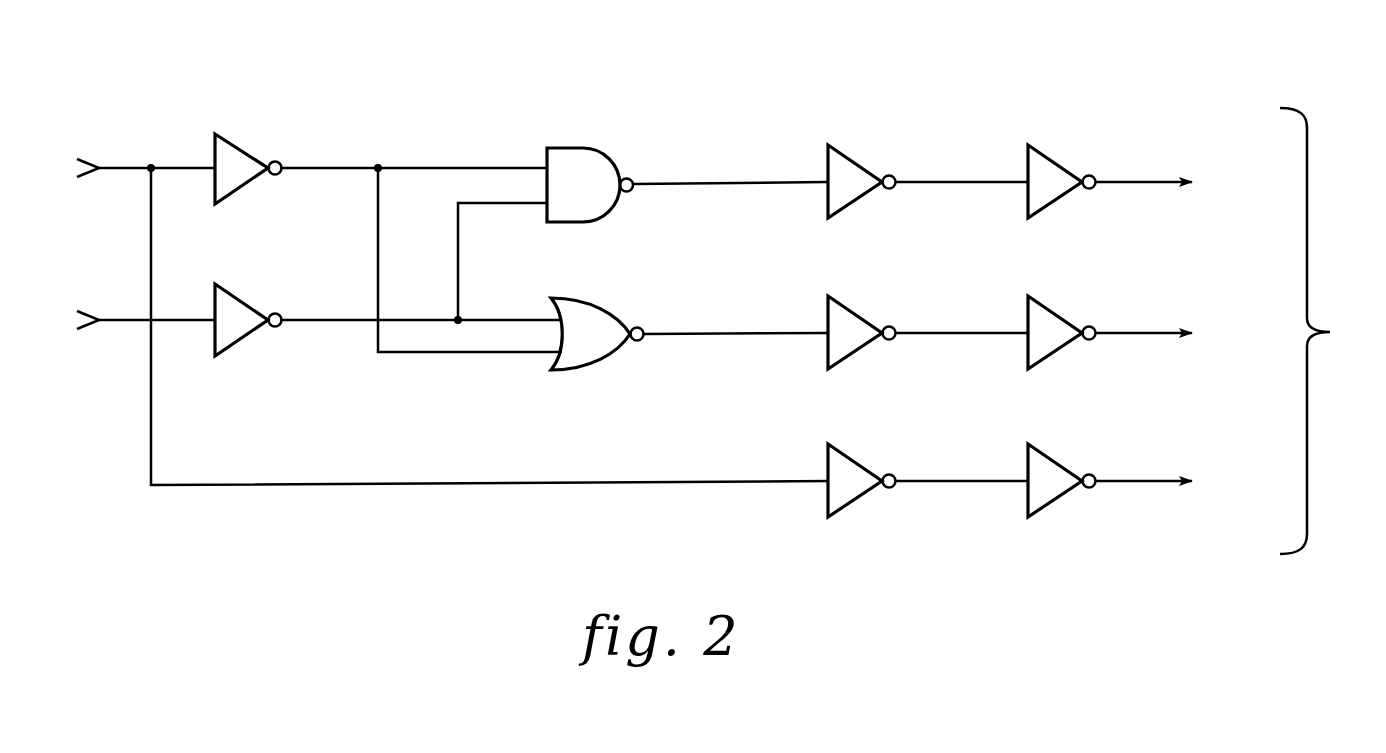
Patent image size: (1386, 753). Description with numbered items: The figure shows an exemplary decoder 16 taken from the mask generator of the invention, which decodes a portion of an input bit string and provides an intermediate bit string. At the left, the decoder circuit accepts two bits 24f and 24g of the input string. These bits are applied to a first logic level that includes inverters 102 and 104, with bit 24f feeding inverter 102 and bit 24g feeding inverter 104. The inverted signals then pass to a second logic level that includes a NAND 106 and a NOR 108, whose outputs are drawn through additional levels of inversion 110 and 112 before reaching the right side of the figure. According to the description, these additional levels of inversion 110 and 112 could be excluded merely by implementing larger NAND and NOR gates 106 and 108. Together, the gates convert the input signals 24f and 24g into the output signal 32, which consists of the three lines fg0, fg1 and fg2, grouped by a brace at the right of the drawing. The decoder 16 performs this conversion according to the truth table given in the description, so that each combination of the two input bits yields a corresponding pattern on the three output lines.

The bit 24f is at (123, 168).
The bit 24g is at (123, 322).
The inverter 102 is at (236, 148).
The inverter 104 is at (230, 298).
The NAND 106 is at (590, 148).
The NOR 108 is at (598, 299).
The decoder 16 is at (334, 518).
The level of inversion 110 is at (854, 126).
The level of inversion 112 is at (1054, 126).
The output signal 32 is at (1296, 331).